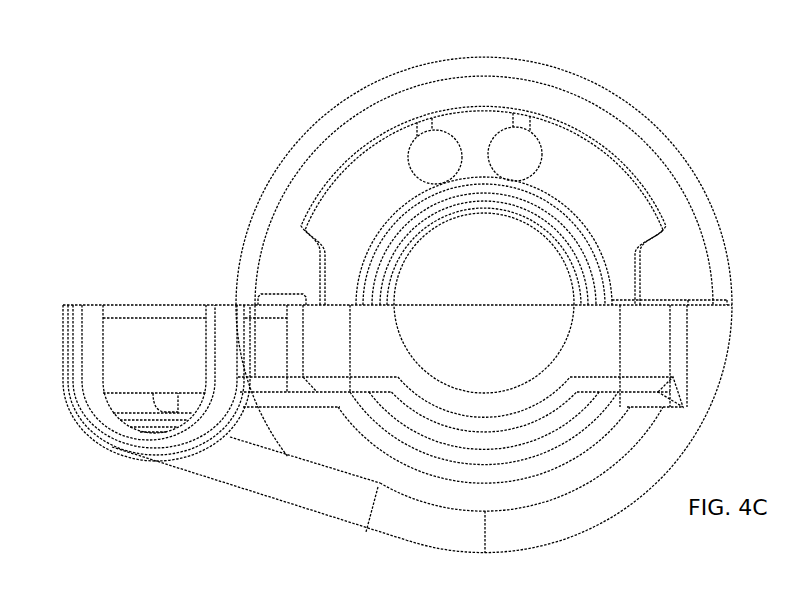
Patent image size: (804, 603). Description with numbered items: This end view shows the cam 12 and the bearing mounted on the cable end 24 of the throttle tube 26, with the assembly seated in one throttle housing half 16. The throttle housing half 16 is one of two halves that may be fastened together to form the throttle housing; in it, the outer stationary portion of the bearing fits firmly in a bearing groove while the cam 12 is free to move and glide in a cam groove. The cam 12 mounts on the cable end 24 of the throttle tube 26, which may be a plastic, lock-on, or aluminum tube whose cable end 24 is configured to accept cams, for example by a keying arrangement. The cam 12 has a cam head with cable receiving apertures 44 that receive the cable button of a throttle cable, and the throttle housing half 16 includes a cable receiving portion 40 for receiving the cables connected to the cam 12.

The cam 12 is at (357, 187).
The throttle housing half 16 is at (290, 482).
The cable end 24 is at (582, 178).
The throttle tube 26 is at (537, 222).
The cable receiving portion 40 is at (147, 343).
The cable receiving apertures 44 is at (435, 148).